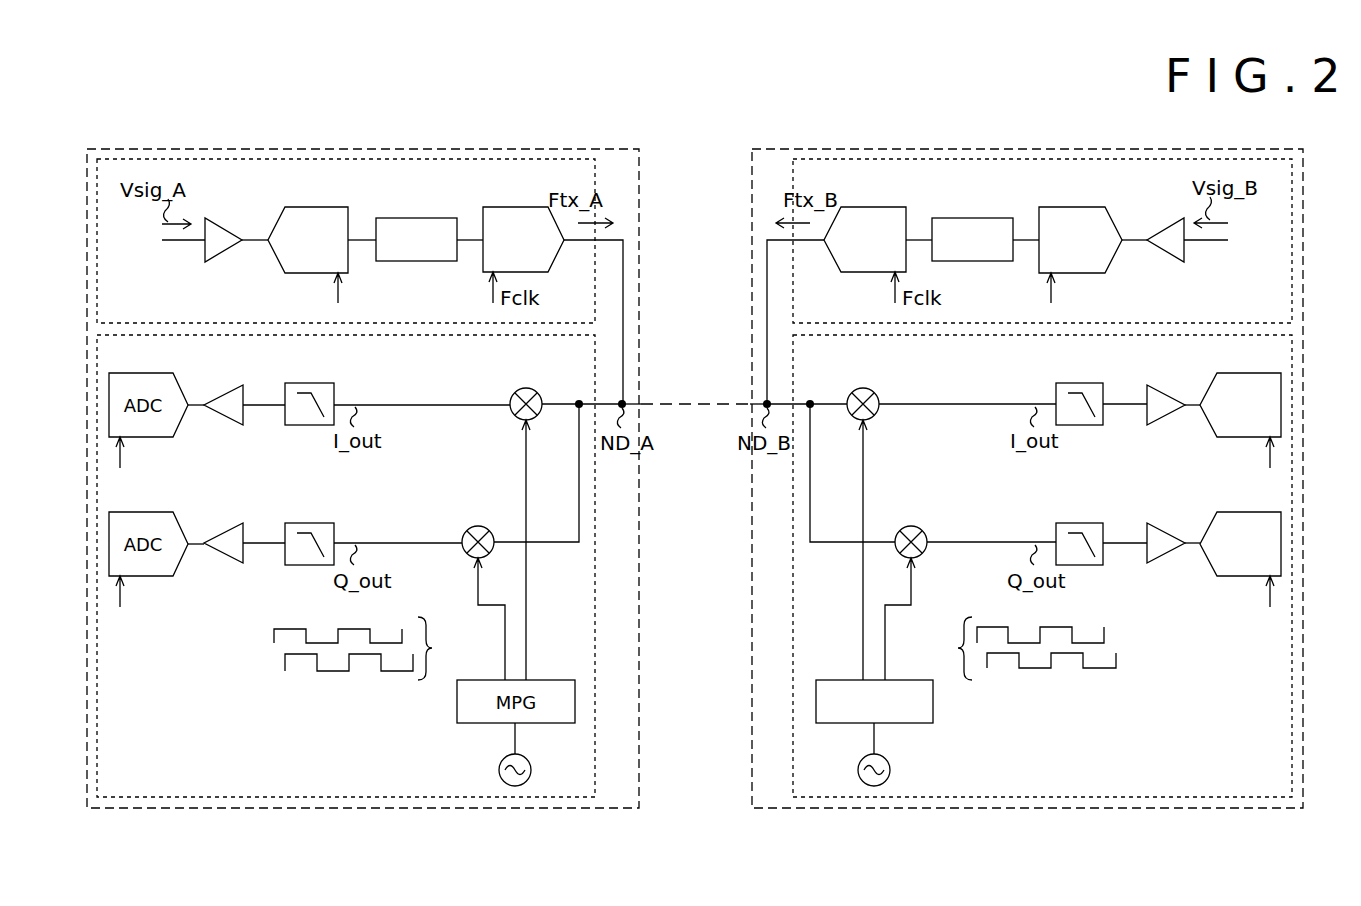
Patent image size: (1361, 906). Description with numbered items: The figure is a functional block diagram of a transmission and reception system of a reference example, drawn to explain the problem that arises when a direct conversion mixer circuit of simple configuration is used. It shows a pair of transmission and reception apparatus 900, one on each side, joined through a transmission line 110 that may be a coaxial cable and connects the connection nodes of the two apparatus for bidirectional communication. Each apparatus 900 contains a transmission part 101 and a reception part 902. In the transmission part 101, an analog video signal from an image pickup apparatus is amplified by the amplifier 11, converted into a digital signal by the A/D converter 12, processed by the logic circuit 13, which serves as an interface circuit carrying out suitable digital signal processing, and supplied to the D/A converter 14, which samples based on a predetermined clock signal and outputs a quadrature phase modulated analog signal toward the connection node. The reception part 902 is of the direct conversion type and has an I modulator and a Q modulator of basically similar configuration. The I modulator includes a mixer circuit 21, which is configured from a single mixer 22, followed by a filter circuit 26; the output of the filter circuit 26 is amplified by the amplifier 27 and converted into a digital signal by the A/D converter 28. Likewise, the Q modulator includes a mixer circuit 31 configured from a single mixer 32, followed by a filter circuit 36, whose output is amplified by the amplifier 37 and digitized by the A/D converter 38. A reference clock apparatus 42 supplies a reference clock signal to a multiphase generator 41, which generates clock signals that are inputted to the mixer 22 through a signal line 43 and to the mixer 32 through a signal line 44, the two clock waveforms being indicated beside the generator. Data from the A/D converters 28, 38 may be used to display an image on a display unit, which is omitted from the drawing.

The transmission and reception apparatus 900 is at (343, 149).
The transmission part 101 is at (143, 323).
The reception part 902 is at (143, 797).
The amplifier 11 is at (227, 230).
The A/D converter 12 is at (309, 207).
The logic circuit 13 is at (419, 218).
The D/A converter 14 is at (519, 207).
The transmission line 110 is at (693, 401).
The mixer 22 is at (875, 393).
The mixer circuit 21 is at (902, 438).
The mixer circuit 31 is at (939, 478).
The mixer 32 is at (923, 531).
The filter circuit 26 is at (1081, 383).
The amplifier 27 is at (1166, 390).
The A/D converter 28 is at (1232, 438).
The filter circuit 36 is at (1081, 523).
The amplifier 37 is at (1166, 530).
The A/D converter 38 is at (1232, 577).
The signal line 43 is at (862, 634).
The signal line 44 is at (886, 634).
The multiphase generator 41 is at (825, 724).
The reference clock apparatus 42 is at (887, 760).